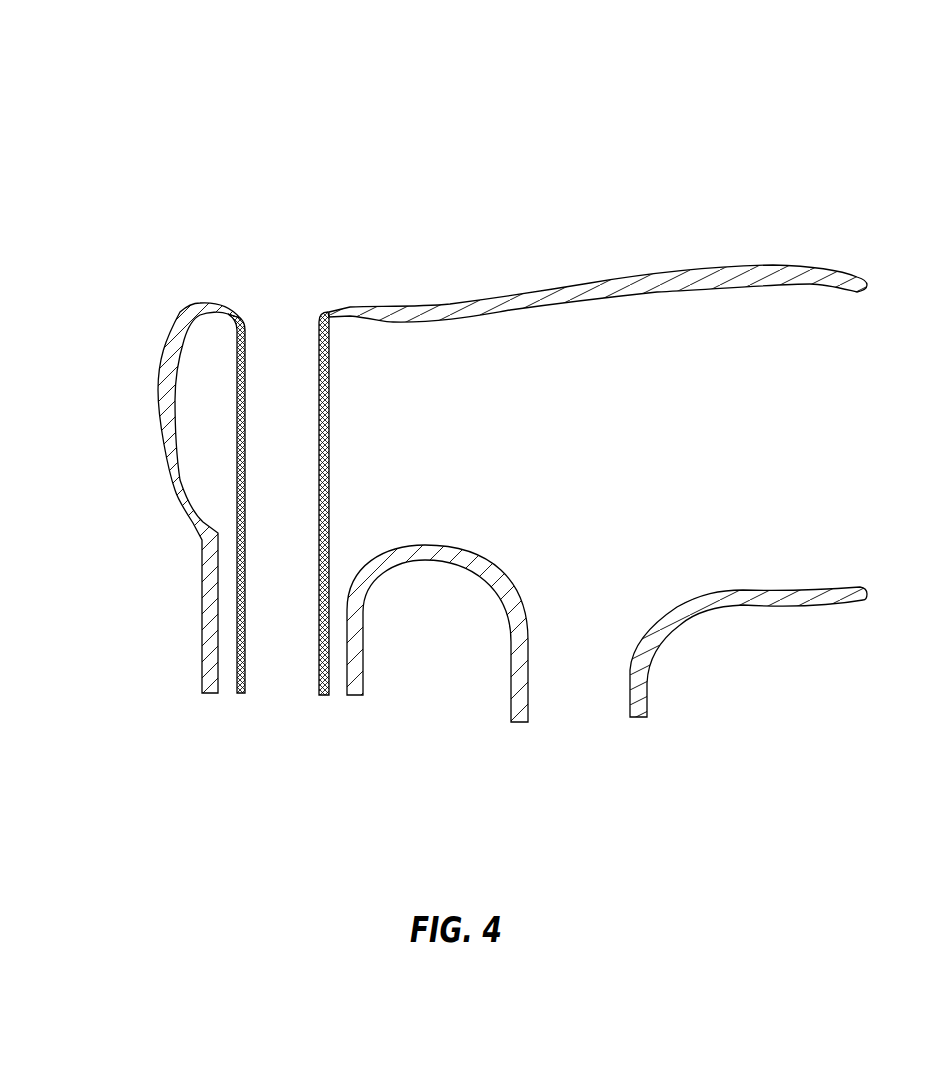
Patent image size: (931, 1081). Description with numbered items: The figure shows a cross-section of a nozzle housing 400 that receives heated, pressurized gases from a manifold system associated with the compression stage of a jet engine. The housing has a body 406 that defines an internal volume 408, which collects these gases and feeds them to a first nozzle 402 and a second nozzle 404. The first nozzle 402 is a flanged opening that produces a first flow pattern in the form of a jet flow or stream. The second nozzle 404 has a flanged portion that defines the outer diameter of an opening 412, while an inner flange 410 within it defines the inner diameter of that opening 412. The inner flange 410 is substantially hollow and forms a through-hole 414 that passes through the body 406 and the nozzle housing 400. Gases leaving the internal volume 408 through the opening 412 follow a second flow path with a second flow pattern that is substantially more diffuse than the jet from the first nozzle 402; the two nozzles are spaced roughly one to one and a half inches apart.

The nozzle housing 400 is at (776, 46).
The first nozzle 402 is at (640, 707).
The second nozzle 404 is at (208, 682).
The body 406 is at (527, 293).
The internal volume 408 is at (640, 420).
The inner flange 410 is at (243, 400).
The opening 412 is at (227, 688).
The through-hole 414 is at (283, 673).